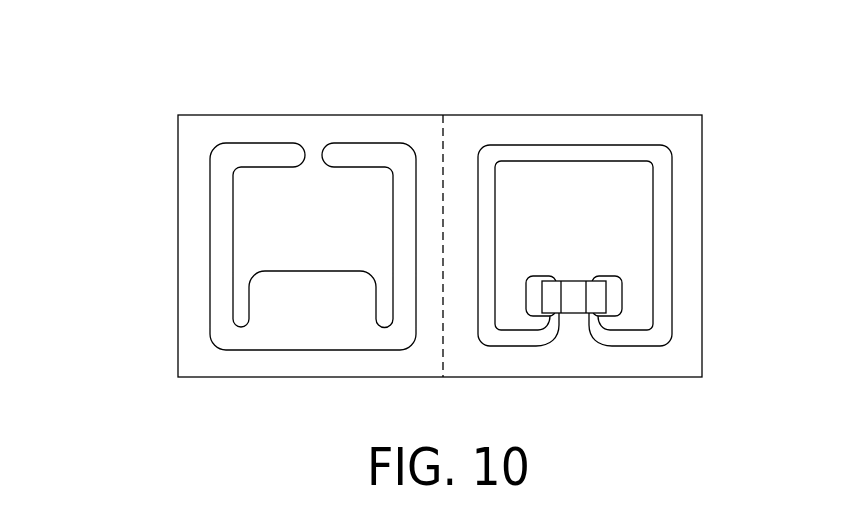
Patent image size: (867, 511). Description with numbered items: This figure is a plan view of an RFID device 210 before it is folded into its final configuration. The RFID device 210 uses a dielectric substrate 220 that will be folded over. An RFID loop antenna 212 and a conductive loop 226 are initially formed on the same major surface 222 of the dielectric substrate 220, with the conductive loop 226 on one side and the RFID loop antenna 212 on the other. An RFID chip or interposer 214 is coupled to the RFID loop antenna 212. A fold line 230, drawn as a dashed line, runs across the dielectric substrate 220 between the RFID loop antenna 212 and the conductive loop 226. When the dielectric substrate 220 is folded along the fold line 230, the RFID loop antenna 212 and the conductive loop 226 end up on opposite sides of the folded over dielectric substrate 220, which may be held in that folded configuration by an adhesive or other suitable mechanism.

The RFID device 210 is at (157, 97).
The RFID loop antenna 212 is at (672, 245).
The RFID chip or interposer 214 is at (573, 302).
The dielectric substrate 220 is at (152, 293).
The major surface 222 is at (208, 358).
The conductive loop 226 is at (218, 218).
The fold line 230 is at (443, 143).